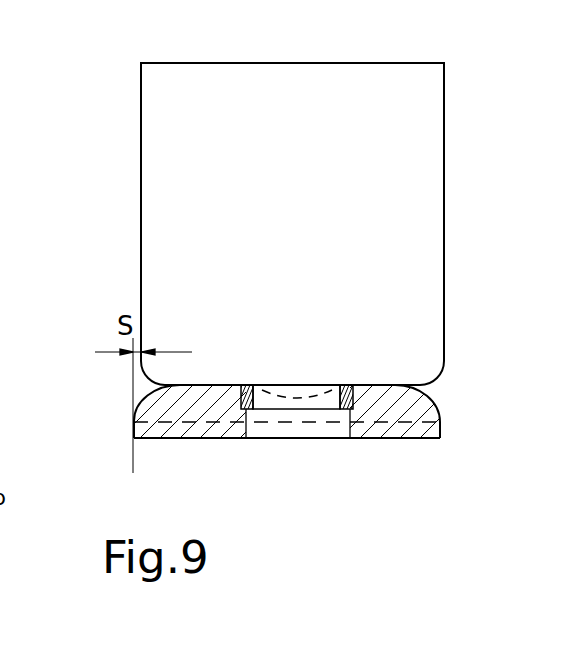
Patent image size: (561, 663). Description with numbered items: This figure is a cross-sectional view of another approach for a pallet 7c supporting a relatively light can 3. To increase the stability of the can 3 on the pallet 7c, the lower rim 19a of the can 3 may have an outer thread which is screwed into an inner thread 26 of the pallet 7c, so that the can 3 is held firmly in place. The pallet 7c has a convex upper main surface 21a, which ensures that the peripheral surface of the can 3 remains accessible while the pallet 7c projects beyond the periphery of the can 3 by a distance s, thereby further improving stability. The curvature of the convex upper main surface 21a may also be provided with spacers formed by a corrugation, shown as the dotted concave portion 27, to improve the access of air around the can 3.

The can 3 is at (446, 228).
The pallet 7c is at (437, 406).
The convex upper main surface 21a is at (152, 397).
The lower rim 19a is at (262, 409).
The dotted concave portion 27 is at (316, 398).
The inner thread 26 is at (353, 401).